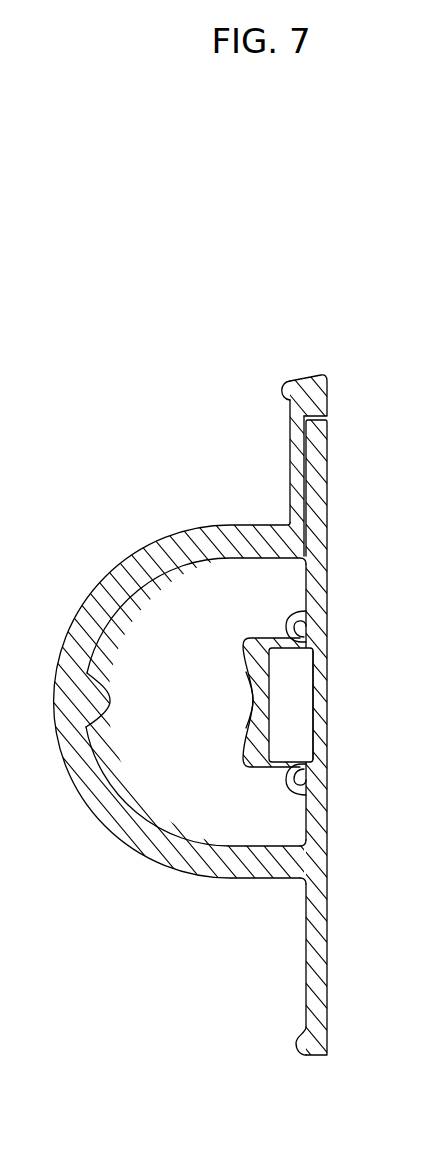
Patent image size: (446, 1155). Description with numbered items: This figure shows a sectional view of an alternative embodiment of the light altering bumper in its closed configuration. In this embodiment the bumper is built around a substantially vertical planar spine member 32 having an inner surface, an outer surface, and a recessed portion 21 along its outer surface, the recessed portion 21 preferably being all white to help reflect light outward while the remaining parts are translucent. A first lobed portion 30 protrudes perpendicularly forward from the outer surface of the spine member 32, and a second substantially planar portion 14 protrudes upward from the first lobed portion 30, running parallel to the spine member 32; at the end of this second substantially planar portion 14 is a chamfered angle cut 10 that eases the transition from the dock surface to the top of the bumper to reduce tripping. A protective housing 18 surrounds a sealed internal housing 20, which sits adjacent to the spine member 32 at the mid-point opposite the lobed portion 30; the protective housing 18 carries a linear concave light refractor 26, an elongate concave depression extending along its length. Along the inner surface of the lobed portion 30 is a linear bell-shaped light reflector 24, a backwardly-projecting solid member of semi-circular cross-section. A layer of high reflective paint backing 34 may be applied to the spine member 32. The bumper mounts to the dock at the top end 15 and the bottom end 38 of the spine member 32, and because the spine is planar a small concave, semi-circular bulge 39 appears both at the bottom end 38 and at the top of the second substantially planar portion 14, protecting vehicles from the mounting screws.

The chamfered angle cut 10 is at (298, 379).
The second substantially planar portion 14 is at (290, 498).
The top end of the spine member 15 is at (318, 477).
The protective housing 18 is at (253, 652).
The sealed internal housing 20 is at (303, 742).
The recessed portion 21 is at (313, 703).
The linear bell-shaped light reflector 24 is at (103, 700).
The linear concave light refractor 26 is at (253, 688).
The first lobed portion 30 is at (92, 605).
The vertical planar spine member 32 is at (320, 803).
The high reflective paint backing 34 is at (328, 861).
The bottom end of the spine member 38 is at (328, 1003).
The small concave semi-circular bulge 39 is at (289, 386).